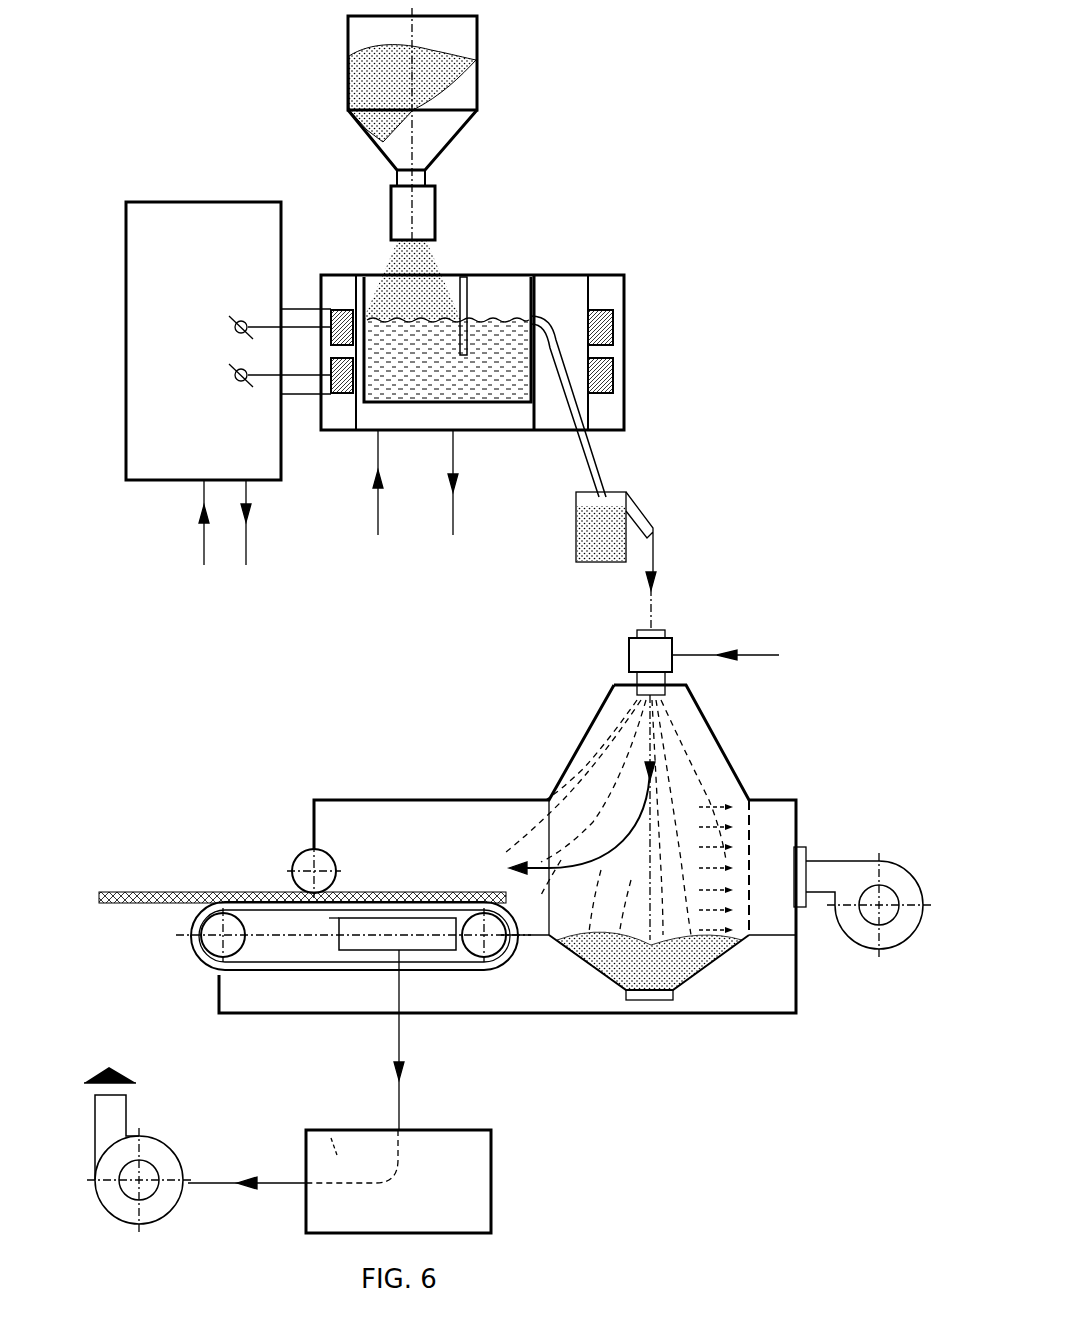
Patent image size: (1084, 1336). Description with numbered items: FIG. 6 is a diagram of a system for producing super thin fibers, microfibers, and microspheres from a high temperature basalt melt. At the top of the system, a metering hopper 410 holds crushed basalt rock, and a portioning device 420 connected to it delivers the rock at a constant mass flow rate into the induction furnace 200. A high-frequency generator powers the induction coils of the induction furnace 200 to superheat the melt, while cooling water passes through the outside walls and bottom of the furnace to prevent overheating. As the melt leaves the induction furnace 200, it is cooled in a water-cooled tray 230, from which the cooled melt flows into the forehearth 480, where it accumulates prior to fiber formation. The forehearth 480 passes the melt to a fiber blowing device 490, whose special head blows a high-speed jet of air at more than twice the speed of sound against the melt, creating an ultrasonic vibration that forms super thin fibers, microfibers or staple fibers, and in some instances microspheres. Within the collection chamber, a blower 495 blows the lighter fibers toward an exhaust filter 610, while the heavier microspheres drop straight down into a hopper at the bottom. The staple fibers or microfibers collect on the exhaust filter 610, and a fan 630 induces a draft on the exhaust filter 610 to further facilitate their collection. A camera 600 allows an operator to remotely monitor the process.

The metering hopper 410 is at (498, 60).
The portioning device 420 is at (424, 218).
The induction furnace 200 is at (343, 289).
The water-cooled tray 230 is at (614, 460).
The forehearth 480 is at (562, 534).
The fiber blowing device 490 is at (634, 664).
The blower 495 is at (860, 966).
The camera 600 is at (553, 907).
The exhaust filter 610 is at (140, 922).
The fan 630 is at (156, 1152).